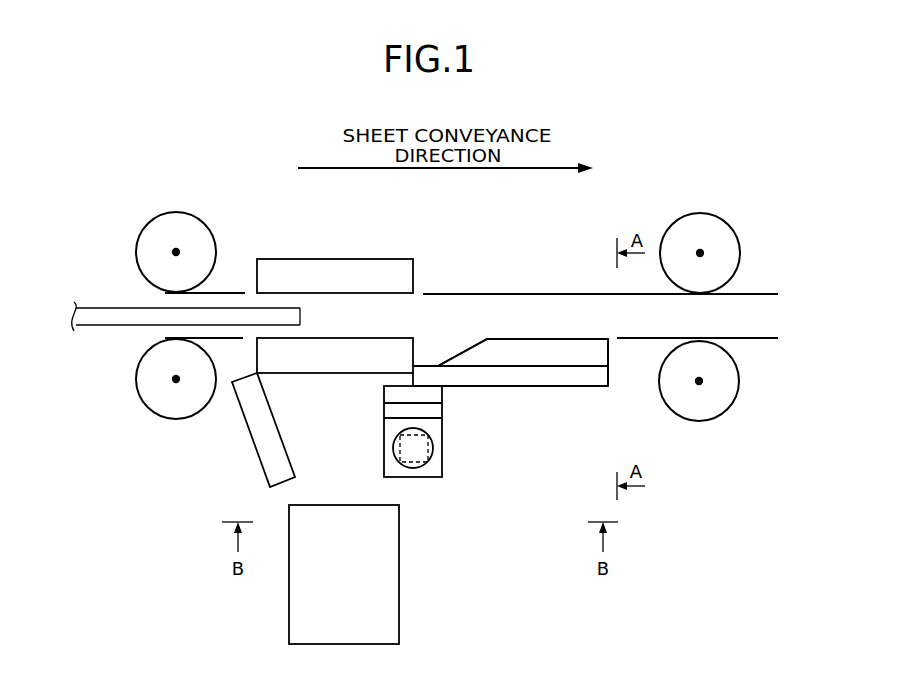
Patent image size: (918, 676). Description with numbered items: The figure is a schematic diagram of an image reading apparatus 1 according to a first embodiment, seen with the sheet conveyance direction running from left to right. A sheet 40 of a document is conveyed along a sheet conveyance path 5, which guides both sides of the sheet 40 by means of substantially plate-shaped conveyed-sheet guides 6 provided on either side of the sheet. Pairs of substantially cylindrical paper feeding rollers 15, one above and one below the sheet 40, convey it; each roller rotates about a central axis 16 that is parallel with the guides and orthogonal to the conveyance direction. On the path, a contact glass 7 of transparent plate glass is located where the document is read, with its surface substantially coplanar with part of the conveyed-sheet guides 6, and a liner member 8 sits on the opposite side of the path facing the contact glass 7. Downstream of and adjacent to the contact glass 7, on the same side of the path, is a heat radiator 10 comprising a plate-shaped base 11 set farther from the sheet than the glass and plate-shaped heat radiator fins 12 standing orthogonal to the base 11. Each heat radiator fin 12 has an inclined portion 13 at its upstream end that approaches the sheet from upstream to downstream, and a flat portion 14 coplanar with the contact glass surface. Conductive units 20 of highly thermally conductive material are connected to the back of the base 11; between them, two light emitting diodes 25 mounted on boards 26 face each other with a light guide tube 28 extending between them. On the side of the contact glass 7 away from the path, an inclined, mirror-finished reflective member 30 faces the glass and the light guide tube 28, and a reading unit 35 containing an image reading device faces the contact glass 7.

The image reading apparatus 1 is at (252, 155).
The sheet conveyance path 5 is at (348, 317).
The conveyed-sheet guides 6 is at (230, 292).
The contact glass 7 is at (325, 373).
The liner member 8 is at (290, 258).
The heat radiator 10 is at (580, 386).
The base 11 is at (543, 375).
The heat radiator fin 12 is at (503, 356).
The inclined portion 13 is at (453, 352).
The flat portion 14 is at (532, 337).
The paper feeding rollers 15 is at (174, 212).
The central axis 16 is at (176, 252).
The conductive units 20 is at (442, 415).
The light emitting diodes 25 is at (428, 447).
The boards 26 is at (437, 432).
The light guide tube 28 is at (434, 453).
The reflective member 30 is at (257, 455).
The reading unit 35 is at (399, 540).
The sheet 40 is at (97, 305).